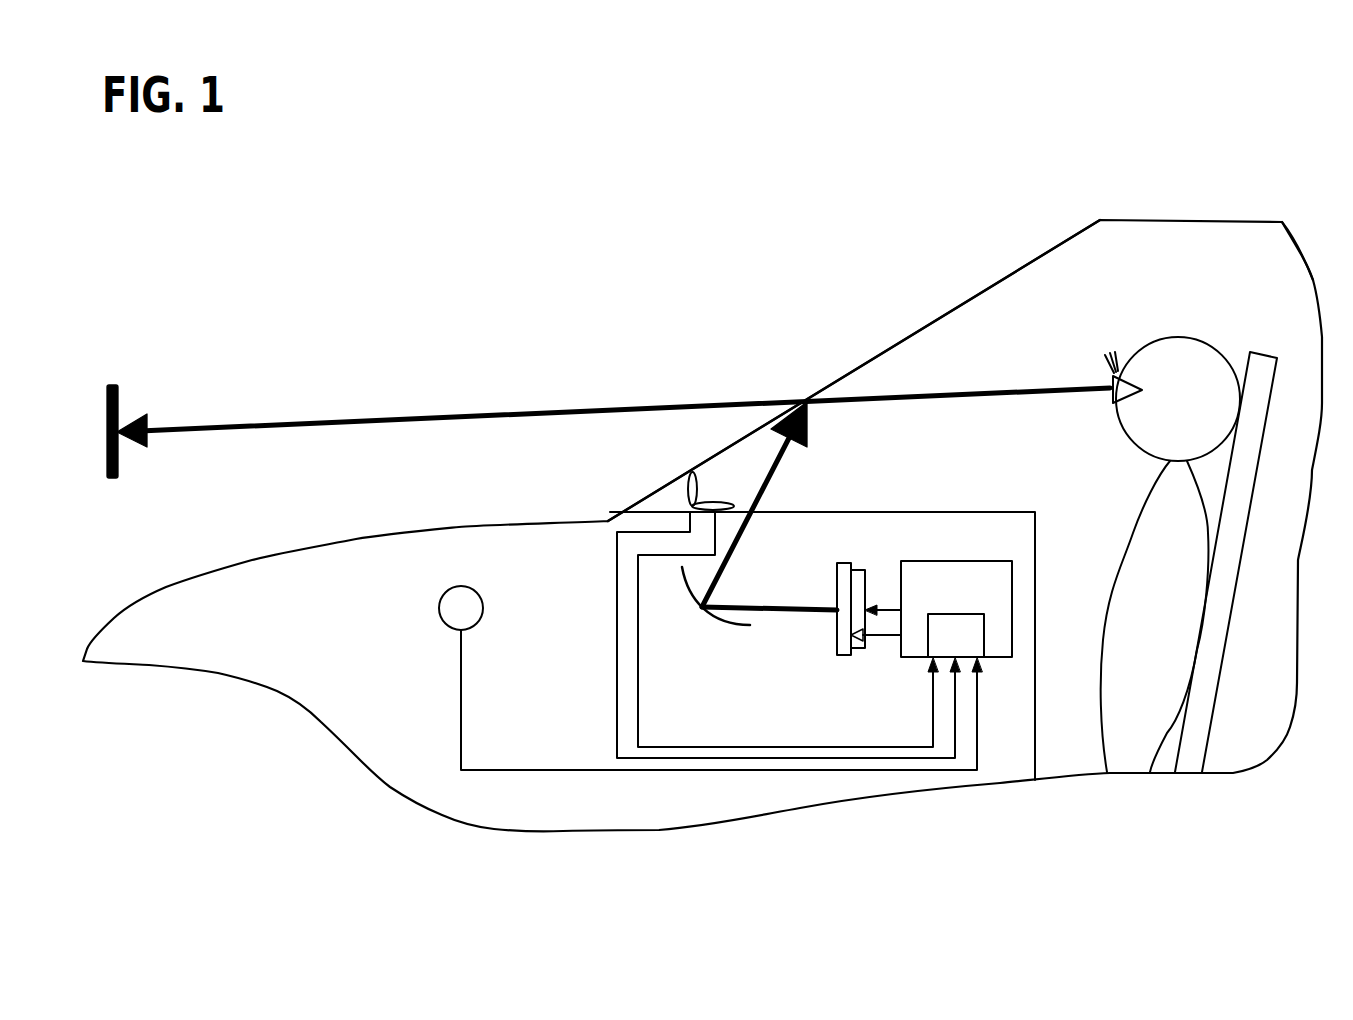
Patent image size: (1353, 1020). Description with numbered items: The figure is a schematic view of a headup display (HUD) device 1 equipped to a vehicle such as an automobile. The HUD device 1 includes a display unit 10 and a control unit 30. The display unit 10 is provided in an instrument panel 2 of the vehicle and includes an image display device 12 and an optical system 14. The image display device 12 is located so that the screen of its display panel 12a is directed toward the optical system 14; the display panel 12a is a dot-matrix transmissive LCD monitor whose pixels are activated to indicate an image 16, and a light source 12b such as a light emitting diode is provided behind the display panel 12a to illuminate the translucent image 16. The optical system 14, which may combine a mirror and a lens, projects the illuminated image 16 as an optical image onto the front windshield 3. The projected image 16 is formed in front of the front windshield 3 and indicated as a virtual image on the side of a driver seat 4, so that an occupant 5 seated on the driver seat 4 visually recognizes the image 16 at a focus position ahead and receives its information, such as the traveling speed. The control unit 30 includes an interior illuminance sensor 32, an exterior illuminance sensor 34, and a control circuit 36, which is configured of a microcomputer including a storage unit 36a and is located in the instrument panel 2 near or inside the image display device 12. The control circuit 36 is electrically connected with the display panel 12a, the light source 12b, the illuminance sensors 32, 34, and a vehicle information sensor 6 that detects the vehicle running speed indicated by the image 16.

The headup display (HUD) device 1 is at (977, 448).
The instrument panel 2 is at (822, 512).
The front windshield 3 is at (923, 325).
The driver seat 4 is at (1260, 367).
The occupant 5 is at (1177, 343).
The vehicle information sensor 6 is at (448, 585).
The display unit 10 is at (859, 548).
The image display device 12 is at (839, 656).
The display panel 12a is at (845, 656).
The light source 12b is at (871, 640).
The optical system 14 is at (733, 627).
The image 16 is at (113, 383).
The control unit 30 is at (961, 549).
The interior illuminance sensor 32 is at (725, 503).
The exterior illuminance sensor 34 is at (689, 483).
The control circuit 36 is at (1012, 612).
The storage unit 36a is at (984, 640).